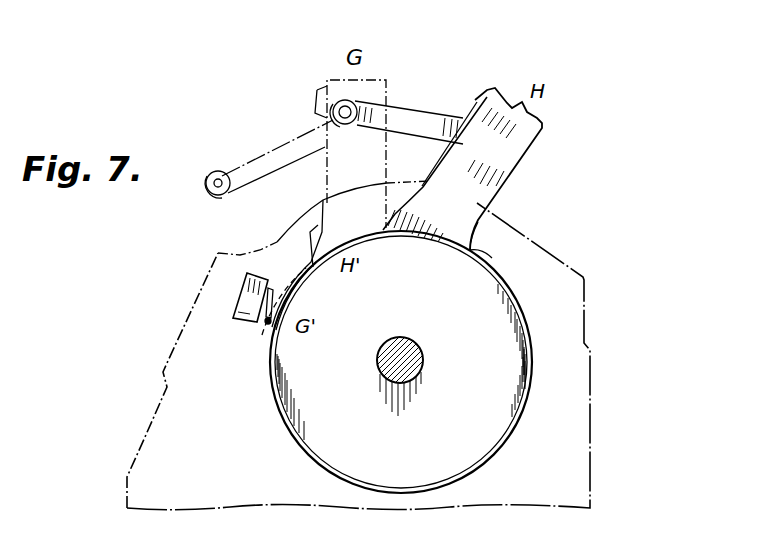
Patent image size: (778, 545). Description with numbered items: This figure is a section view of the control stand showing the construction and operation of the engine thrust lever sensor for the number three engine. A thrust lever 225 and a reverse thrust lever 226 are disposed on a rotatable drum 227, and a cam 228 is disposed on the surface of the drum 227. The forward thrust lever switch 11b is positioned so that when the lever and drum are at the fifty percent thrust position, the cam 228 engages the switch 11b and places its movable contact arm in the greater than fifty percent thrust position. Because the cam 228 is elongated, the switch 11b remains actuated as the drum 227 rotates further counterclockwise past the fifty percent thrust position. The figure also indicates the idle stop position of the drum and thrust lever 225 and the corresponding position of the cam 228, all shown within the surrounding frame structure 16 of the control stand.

The frame 16 is at (585, 297).
The reverse thrust lever 226 is at (397, 115).
The thrust lever 225 is at (488, 95).
The rotatable drum 227 is at (493, 270).
The cam 228 is at (310, 232).
The forward thrust lever switch 11b is at (247, 303).